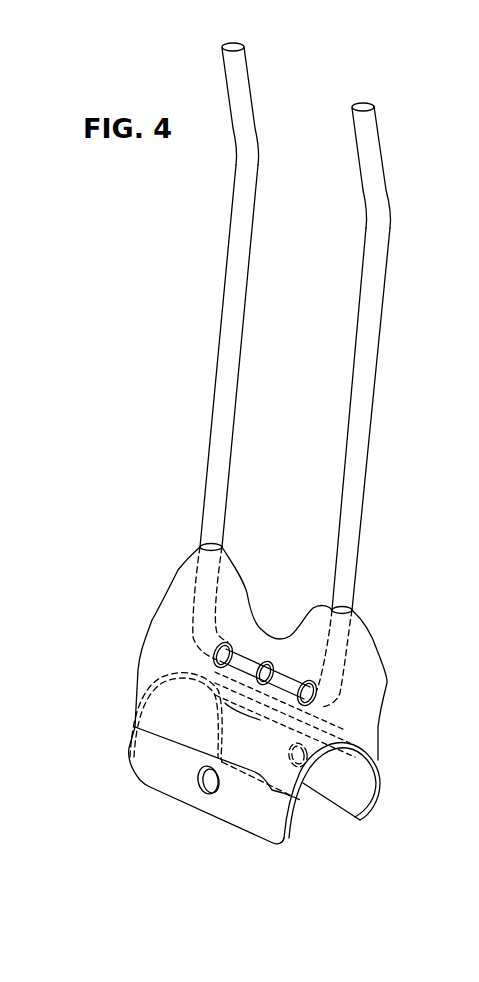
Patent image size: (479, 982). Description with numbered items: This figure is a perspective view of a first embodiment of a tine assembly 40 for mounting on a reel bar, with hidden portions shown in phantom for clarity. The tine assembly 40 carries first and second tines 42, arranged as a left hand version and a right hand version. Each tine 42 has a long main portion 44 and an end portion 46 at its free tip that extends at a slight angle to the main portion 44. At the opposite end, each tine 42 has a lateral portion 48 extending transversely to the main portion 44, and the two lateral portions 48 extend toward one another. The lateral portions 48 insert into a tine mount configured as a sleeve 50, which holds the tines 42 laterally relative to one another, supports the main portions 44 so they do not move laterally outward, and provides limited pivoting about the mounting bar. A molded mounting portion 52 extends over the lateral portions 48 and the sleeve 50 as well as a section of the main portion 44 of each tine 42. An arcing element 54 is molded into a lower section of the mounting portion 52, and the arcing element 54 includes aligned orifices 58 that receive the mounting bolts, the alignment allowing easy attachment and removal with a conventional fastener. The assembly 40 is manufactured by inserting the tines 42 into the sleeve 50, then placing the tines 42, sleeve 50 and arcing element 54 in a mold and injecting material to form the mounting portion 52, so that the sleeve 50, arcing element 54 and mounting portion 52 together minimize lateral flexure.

The tine assembly 40 is at (433, 235).
The tine 42 is at (355, 322).
The main portion 44 is at (240, 252).
The end portion 46 is at (245, 105).
The lateral portion 48 is at (287, 680).
The sleeve 50 is at (317, 688).
The mounting portion 52 is at (365, 718).
The arcing element 54 is at (360, 797).
The orifice 58 is at (210, 778).